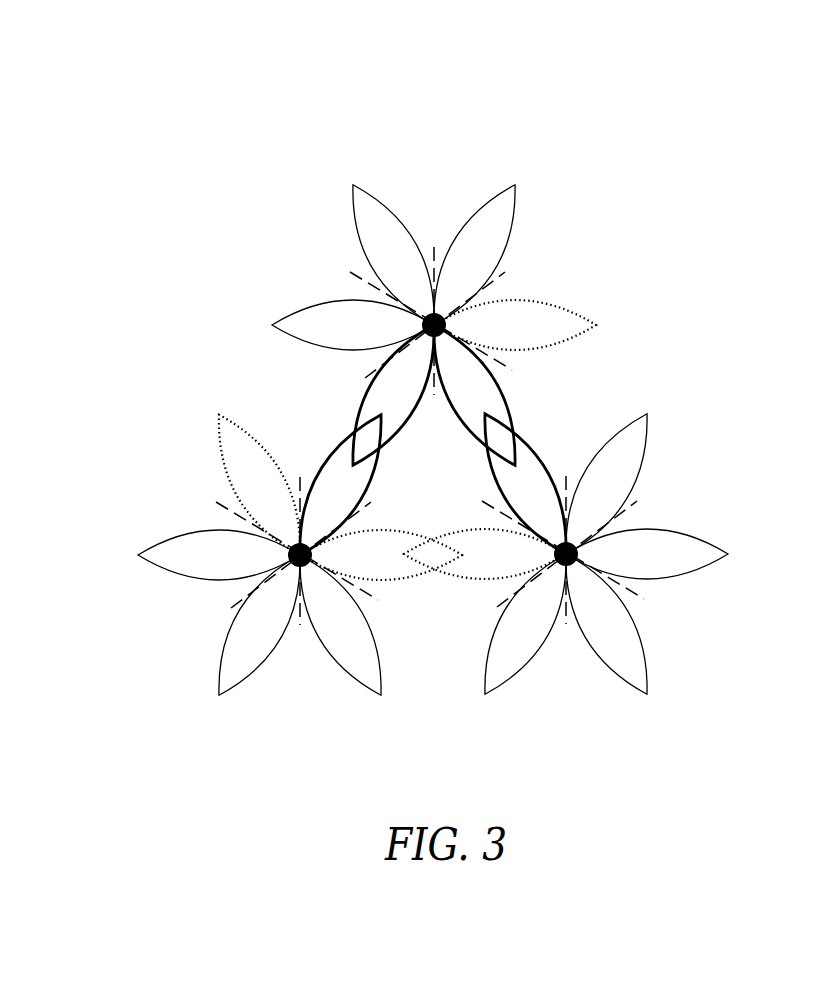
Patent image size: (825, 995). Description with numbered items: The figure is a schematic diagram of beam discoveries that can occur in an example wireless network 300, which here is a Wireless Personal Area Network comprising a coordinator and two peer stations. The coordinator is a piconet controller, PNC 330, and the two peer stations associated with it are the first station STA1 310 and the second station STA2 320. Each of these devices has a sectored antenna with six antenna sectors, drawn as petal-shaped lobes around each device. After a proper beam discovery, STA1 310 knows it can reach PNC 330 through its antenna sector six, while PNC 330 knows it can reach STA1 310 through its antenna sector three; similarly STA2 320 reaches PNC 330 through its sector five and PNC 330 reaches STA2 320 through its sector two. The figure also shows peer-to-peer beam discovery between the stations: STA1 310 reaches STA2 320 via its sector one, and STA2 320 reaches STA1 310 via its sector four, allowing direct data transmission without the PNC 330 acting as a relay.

The wireless network 300 is at (640, 78).
The piconet controller (PNC) 330 is at (565, 253).
The Station 1 (STA1) 310 is at (168, 482).
The Station 2 (STA2) 320 is at (700, 481).